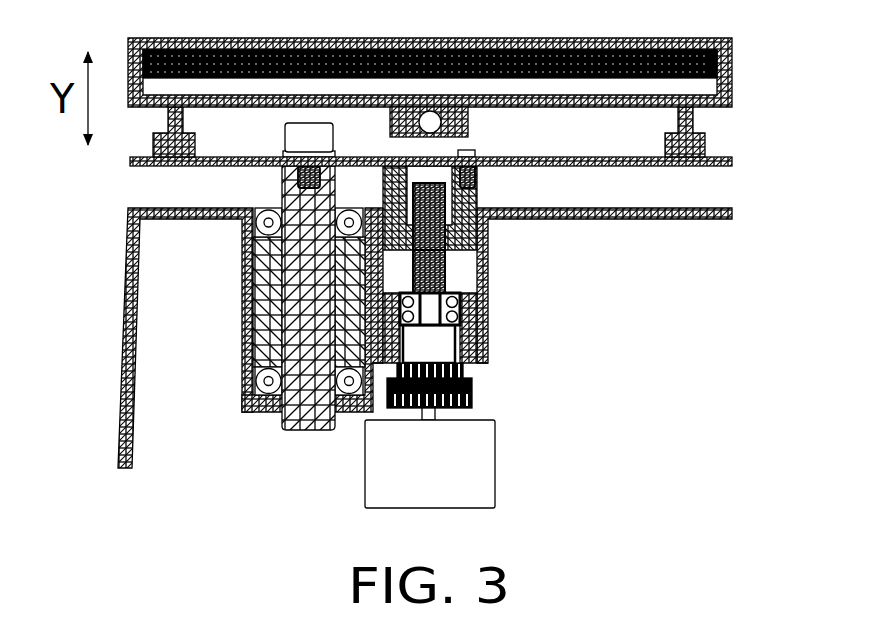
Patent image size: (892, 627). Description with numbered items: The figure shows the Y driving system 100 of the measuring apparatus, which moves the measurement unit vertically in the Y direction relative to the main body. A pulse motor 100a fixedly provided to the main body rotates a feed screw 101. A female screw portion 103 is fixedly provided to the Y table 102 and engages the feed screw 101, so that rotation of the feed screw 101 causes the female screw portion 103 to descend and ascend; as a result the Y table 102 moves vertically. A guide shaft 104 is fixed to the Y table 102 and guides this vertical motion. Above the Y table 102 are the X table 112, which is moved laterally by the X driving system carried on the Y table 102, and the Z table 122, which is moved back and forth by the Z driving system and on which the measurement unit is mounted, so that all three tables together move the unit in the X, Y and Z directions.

The Y driving system 100 is at (630, 279).
The pulse motor 100a is at (462, 468).
The feed screw 101 is at (488, 305).
The Y table 102 is at (152, 166).
The female screw portion 103 is at (488, 235).
The guide shaft 104 is at (318, 423).
The X table 112 is at (700, 107).
The Z table 122 is at (490, 43).